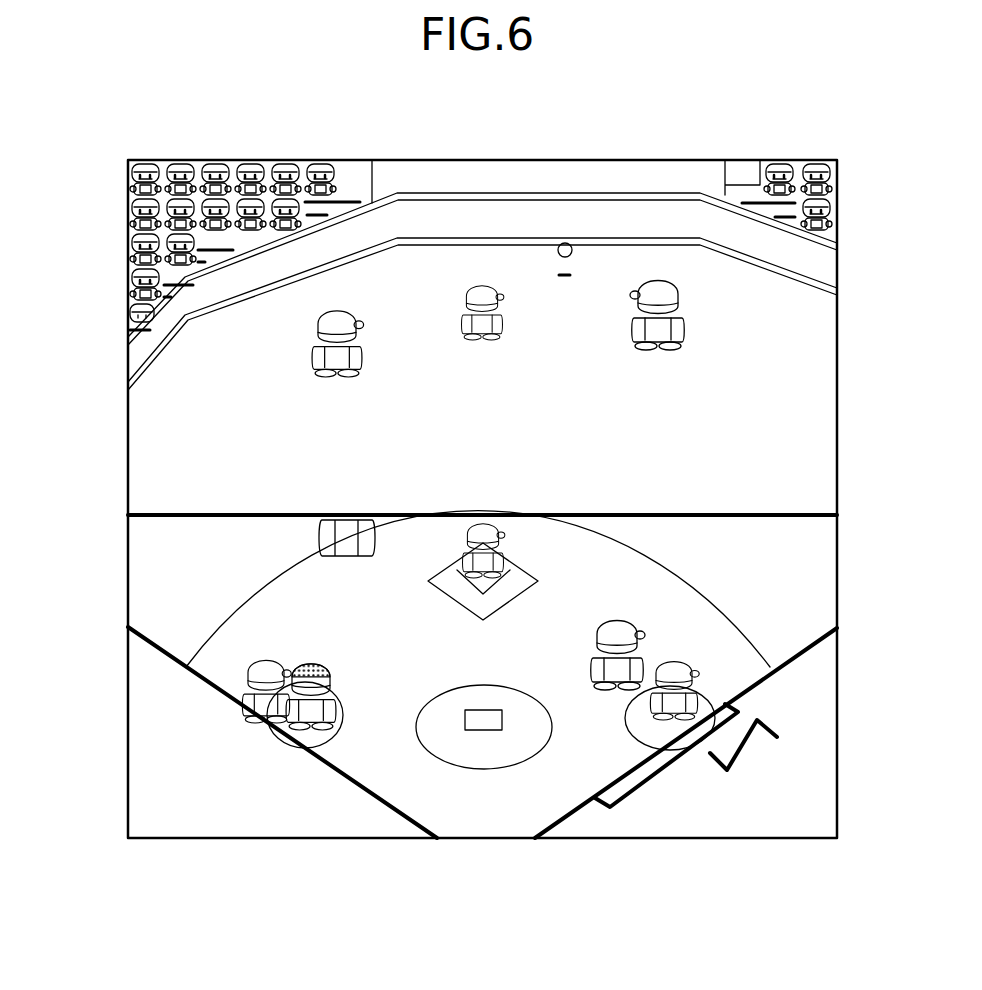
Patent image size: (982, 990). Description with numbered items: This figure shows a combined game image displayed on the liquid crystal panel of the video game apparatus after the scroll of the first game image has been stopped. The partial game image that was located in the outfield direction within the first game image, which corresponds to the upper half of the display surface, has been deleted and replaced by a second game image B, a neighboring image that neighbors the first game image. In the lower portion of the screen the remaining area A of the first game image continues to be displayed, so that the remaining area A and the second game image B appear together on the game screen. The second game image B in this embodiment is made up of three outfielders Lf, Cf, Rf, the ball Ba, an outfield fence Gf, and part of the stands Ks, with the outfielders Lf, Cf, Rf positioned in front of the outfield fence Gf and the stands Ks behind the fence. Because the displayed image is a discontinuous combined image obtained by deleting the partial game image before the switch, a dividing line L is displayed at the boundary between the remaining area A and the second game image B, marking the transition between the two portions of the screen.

The stands Ks is at (128, 195).
The outfield fence Gf is at (663, 213).
The outfielder Lf is at (308, 378).
The outfielder Cf is at (466, 342).
The outfielder Rf is at (687, 338).
The ball Ba is at (562, 262).
The dividing line L is at (690, 513).
The remaining area A is at (872, 537).
The second game image B is at (872, 193).